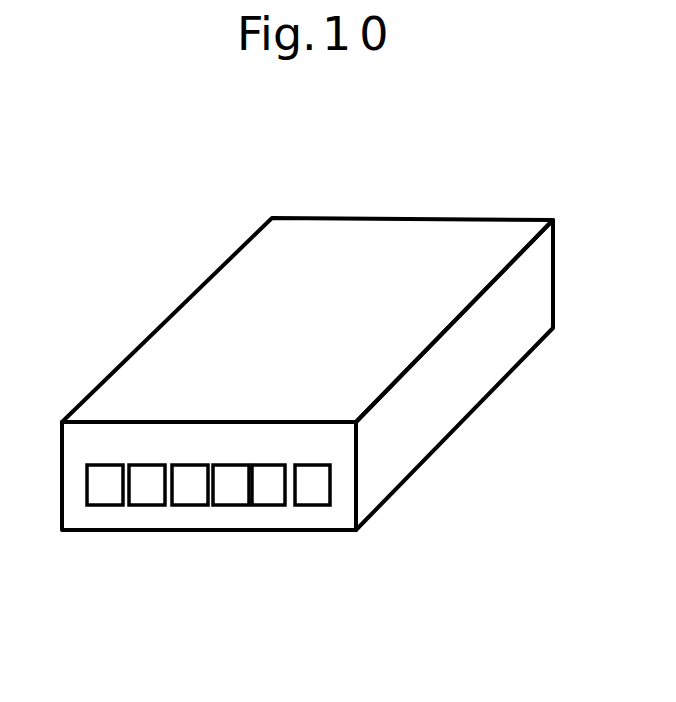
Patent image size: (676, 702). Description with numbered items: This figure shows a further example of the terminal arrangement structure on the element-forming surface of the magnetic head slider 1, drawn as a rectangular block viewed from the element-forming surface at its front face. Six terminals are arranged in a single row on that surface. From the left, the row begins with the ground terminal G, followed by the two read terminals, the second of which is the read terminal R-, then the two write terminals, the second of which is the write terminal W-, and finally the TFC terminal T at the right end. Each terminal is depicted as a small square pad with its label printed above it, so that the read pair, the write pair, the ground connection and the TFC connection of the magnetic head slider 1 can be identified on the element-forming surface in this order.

The magnetic head slider 1 is at (307, 374).
The ground terminal G is at (105, 466).
The read terminal R- is at (190, 466).
The write terminal W- is at (269, 466).
The TFC terminal T is at (312, 466).